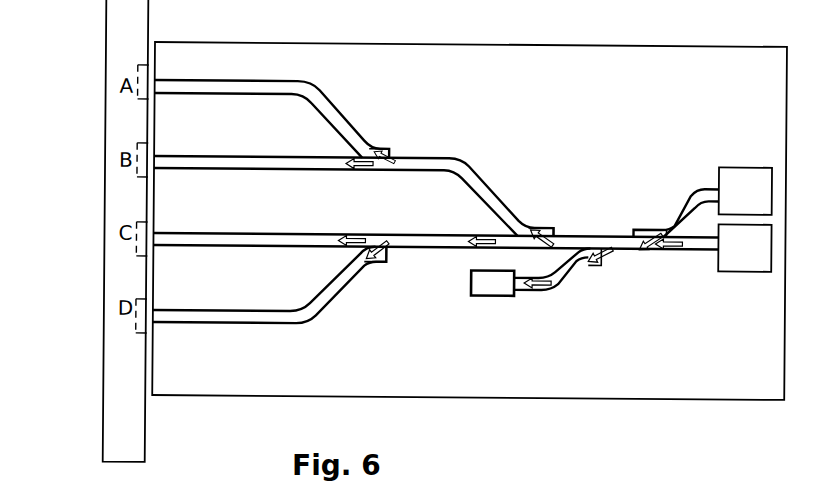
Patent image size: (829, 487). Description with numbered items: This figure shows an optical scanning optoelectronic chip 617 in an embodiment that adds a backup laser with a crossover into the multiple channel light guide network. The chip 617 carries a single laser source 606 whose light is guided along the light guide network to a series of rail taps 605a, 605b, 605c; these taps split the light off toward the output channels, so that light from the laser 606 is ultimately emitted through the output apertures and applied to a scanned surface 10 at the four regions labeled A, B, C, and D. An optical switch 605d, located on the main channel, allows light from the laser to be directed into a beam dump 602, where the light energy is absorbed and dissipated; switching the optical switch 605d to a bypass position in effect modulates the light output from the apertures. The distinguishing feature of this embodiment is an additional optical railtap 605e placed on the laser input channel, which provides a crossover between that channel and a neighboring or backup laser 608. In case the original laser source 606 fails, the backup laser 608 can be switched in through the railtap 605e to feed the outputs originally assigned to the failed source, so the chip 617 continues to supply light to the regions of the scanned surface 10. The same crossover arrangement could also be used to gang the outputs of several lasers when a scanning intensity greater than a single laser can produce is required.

The scanned surface 10 is at (107, 40).
The chip 617 is at (598, 86).
The rail tap 605a is at (538, 198).
The rail tap 605b is at (414, 136).
The rail tap 605c is at (358, 217).
The optical switch 605d is at (591, 290).
The optical railtap 605e is at (653, 199).
The beam dump 602 is at (530, 272).
The laser source 606 is at (726, 255).
The backup laser 608 is at (726, 198).